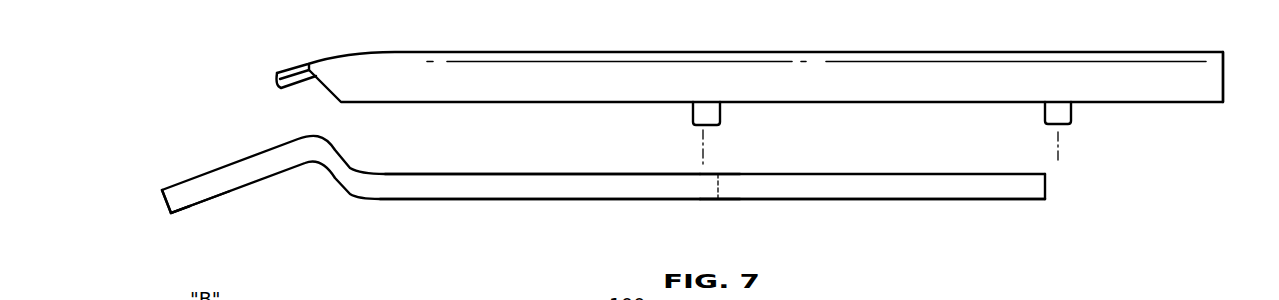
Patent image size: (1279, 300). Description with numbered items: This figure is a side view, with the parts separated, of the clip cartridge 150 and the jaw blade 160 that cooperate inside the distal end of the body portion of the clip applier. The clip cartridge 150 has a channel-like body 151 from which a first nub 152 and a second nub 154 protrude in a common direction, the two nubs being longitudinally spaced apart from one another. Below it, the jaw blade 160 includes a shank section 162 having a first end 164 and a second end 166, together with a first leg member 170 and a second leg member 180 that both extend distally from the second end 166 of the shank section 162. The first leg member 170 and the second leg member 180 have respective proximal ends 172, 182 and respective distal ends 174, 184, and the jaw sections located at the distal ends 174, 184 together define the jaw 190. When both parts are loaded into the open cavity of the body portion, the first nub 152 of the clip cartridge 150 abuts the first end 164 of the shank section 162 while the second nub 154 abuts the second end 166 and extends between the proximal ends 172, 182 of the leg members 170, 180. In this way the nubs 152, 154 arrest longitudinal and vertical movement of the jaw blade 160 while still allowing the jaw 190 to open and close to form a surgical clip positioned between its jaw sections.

The clip cartridge 150 is at (785, 52).
The body 151 is at (1181, 102).
The first nub 152 is at (1064, 114).
The second nub 154 is at (706, 109).
The jaw blade 160 is at (840, 174).
The shank section 162 is at (913, 200).
The first end 164 is at (1046, 190).
The second end 166 is at (718, 174).
The first leg member 170 is at (540, 218).
The second leg member 180 is at (502, 200).
The proximal end 172 is at (747, 204).
The proximal end 182 is at (710, 200).
The distal end 174 is at (200, 233).
The distal end 184 is at (190, 198).
The jaw 190 is at (170, 187).